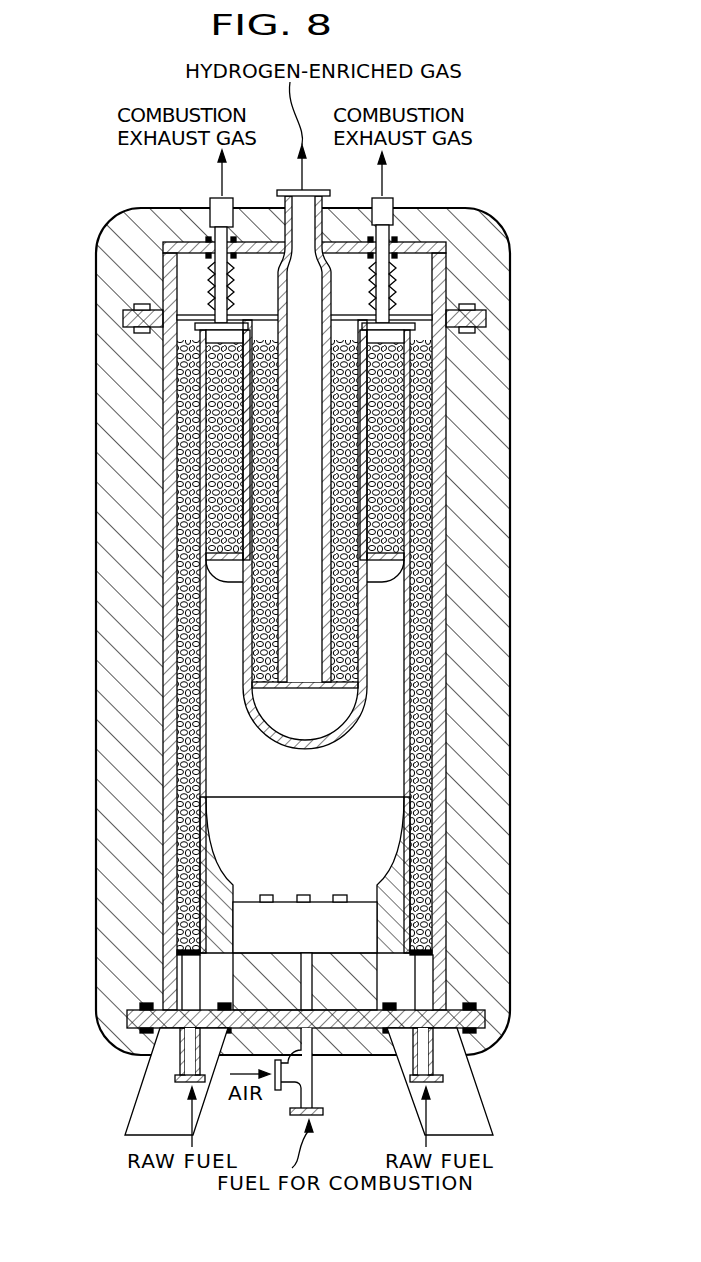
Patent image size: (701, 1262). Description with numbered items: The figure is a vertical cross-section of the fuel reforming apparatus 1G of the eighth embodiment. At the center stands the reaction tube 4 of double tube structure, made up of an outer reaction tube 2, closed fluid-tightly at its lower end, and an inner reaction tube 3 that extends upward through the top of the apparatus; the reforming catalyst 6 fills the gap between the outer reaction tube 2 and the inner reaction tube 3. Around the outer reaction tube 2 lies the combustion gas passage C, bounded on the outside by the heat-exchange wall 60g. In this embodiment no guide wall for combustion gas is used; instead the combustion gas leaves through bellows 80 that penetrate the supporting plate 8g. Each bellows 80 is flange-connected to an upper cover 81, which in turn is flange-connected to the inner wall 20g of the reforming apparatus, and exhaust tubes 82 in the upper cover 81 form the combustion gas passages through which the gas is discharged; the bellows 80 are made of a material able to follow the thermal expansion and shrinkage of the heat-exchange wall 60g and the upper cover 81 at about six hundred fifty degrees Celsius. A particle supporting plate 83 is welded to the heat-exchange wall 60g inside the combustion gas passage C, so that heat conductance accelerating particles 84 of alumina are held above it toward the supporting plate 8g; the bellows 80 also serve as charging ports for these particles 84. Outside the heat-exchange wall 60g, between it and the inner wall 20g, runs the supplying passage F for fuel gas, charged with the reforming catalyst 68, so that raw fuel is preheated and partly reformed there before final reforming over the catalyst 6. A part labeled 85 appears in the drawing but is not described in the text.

The fuel reforming apparatus 1G is at (361, 556).
The exhaust tube 82 is at (322, 242).
The upper cover 81 is at (332, 217).
The bellows 80 is at (379, 281).
The supporting plate 8g is at (365, 302).
The reforming catalyst 6 is at (473, 647).
The combustion gas passage C is at (484, 631).
The reforming catalyst 68 is at (484, 440).
The inner reaction tube 3 is at (407, 436).
The outer reaction tube 2 is at (390, 534).
The reaction tube 4 is at (410, 469).
The heat conductance accelerating particles 84 is at (222, 448).
The particle supporting plate 83 is at (227, 638).
The support ring 85 is at (223, 565).
The heat-exchange wall 60g is at (116, 647).
The inner wall of the reforming apparatus 20g is at (105, 631).
The supplying passage for fuel gas F is at (123, 730).